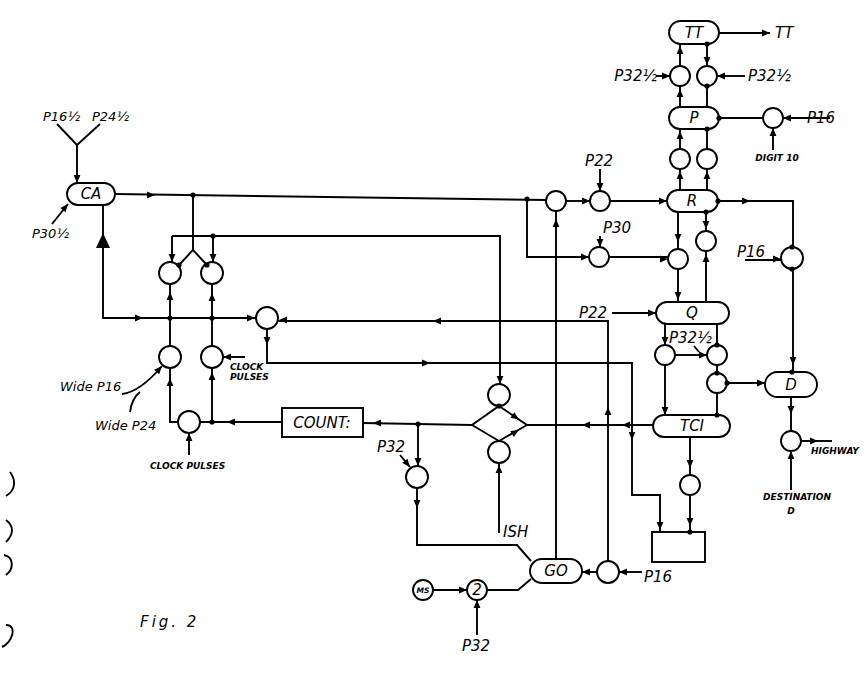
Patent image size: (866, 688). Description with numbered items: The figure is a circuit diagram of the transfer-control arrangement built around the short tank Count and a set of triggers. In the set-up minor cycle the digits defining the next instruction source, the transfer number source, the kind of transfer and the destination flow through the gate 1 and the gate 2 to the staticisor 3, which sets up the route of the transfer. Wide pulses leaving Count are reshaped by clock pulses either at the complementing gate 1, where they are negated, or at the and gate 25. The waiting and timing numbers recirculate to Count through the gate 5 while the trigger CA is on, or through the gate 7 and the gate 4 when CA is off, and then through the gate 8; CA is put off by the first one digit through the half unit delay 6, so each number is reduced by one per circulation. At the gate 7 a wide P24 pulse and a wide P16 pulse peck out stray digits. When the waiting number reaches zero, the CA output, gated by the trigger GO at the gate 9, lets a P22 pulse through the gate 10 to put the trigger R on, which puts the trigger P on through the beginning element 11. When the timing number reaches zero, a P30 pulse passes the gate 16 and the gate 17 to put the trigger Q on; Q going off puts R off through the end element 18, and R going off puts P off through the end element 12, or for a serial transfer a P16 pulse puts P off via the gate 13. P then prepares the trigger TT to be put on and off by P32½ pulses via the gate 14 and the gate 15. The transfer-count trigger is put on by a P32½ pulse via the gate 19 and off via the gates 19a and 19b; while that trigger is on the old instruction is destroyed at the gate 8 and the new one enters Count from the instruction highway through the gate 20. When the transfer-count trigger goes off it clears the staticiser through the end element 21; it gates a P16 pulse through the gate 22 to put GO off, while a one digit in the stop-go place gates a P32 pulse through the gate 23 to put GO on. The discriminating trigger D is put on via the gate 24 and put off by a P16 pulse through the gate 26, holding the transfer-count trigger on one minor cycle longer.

The complementing gate 1 is at (218, 348).
The gate 2 is at (276, 312).
The staticisor 3 is at (706, 535).
The gate 4 is at (161, 268).
The gate 5 is at (221, 270).
The half unit delay 6 is at (109, 243).
The gate 7 is at (176, 348).
The gate 8 is at (507, 392).
The gate 9 is at (563, 196).
The gate 10 is at (607, 197).
The beginning element 11 is at (671, 155).
The end element 12 is at (720, 152).
The gate 13 is at (777, 109).
The gate 14 is at (683, 68).
The gate 15 is at (714, 68).
The gate 16 is at (606, 268).
The gate 17 is at (683, 270).
The end element 18 is at (715, 239).
The gate 19 is at (657, 351).
The gate 19a is at (726, 353).
The gate 19b is at (725, 380).
The gate 20 is at (508, 460).
The end element 21 is at (705, 479).
The gate 22 is at (616, 567).
The gate 23 is at (427, 472).
The gate 24 is at (799, 436).
The and gate 25 is at (197, 428).
The gate 26 is at (803, 259).